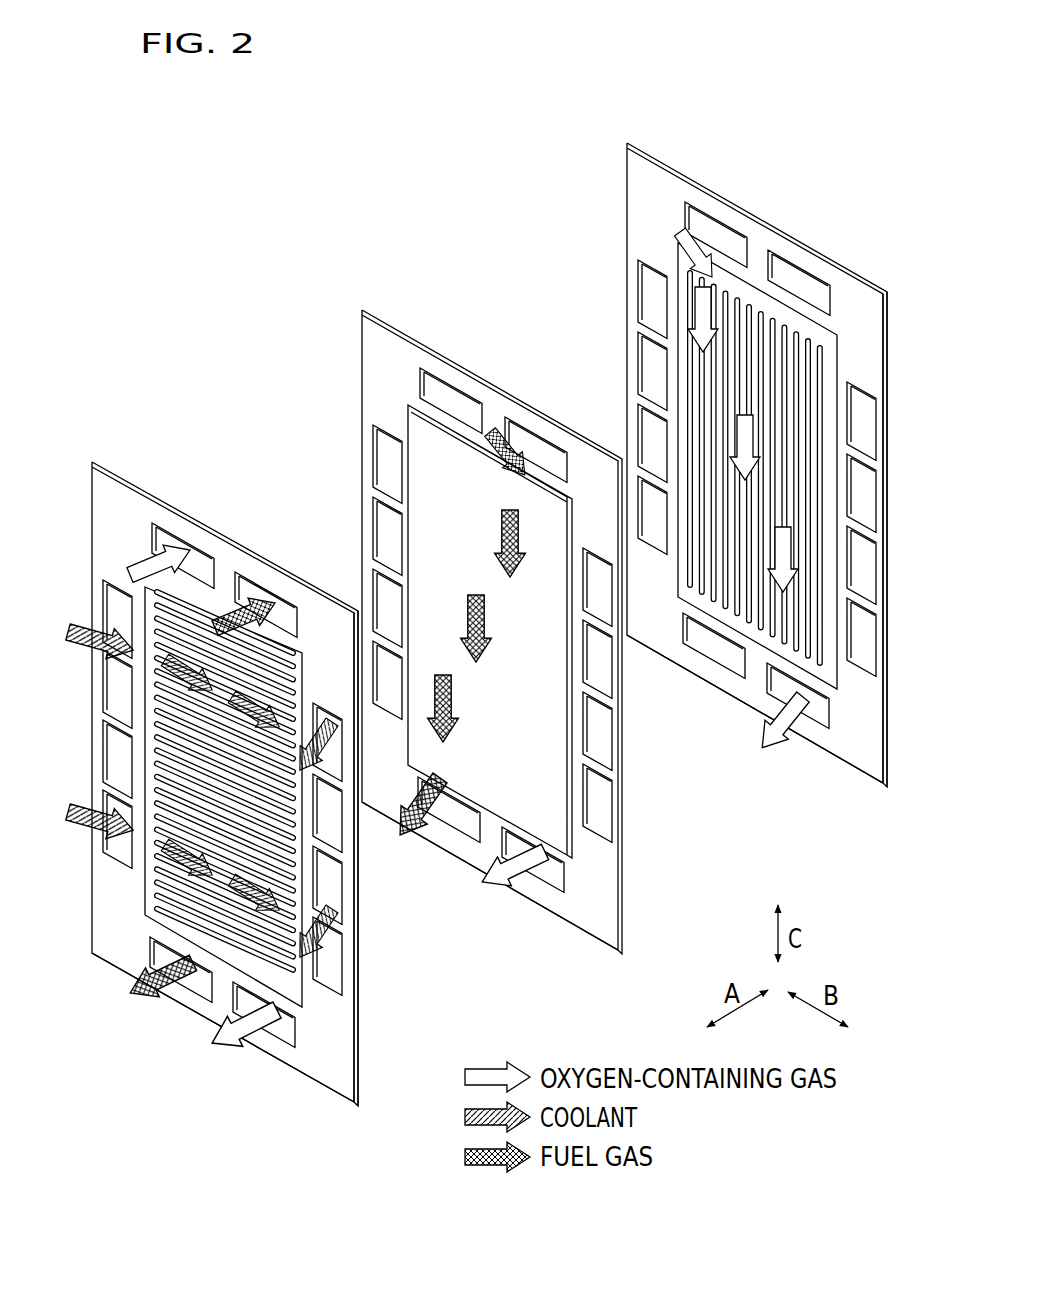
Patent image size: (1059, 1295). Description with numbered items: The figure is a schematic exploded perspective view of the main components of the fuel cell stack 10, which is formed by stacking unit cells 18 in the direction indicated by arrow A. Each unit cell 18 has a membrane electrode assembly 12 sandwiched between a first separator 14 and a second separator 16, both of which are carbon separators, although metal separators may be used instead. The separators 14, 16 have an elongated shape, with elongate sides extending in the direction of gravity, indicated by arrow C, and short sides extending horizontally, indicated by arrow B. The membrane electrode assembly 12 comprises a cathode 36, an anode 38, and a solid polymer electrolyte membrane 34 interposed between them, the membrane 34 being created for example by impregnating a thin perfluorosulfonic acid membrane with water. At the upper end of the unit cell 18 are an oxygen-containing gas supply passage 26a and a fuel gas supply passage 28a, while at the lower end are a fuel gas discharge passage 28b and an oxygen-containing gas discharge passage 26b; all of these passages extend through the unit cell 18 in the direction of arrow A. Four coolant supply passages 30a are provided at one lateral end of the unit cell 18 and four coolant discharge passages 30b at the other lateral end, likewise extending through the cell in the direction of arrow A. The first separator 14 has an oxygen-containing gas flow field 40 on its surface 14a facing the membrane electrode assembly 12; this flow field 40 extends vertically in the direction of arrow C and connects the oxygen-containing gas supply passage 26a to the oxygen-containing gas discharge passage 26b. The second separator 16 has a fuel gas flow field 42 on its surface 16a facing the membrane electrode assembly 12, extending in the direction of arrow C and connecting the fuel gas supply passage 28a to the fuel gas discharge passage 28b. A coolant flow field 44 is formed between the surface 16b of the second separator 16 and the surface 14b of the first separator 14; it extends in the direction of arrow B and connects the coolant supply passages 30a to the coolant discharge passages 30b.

The fuel cell stack 10 is at (457, 161).
The membrane electrode assembly 12 is at (360, 305).
The first separator 14 is at (625, 138).
The surface of first separator 14a is at (830, 745).
The surface of first separator 14b is at (870, 760).
The second separator 16 is at (91, 458).
The surface of second separator 16a is at (340, 1078).
The surface of second separator 16b is at (300, 1063).
The unit cell 18 is at (407, 161).
The oxygen-containing gas supply passage 26a is at (170, 547).
The oxygen-containing gas discharge passage 26b is at (287, 1033).
The fuel gas supply passage 28a is at (247, 587).
The fuel gas discharge passage 28b is at (203, 980).
The coolant supply passage 30a is at (115, 828).
The coolant discharge passage 30b is at (340, 928).
The solid polymer electrolyte membrane 34 is at (580, 900).
The cathode 36 is at (440, 518).
The anode 38 is at (440, 465).
The oxygen-containing gas flow field 40 is at (722, 397).
The fuel gas flow field 42 is at (270, 862).
The coolant flow field 44 is at (204, 878).